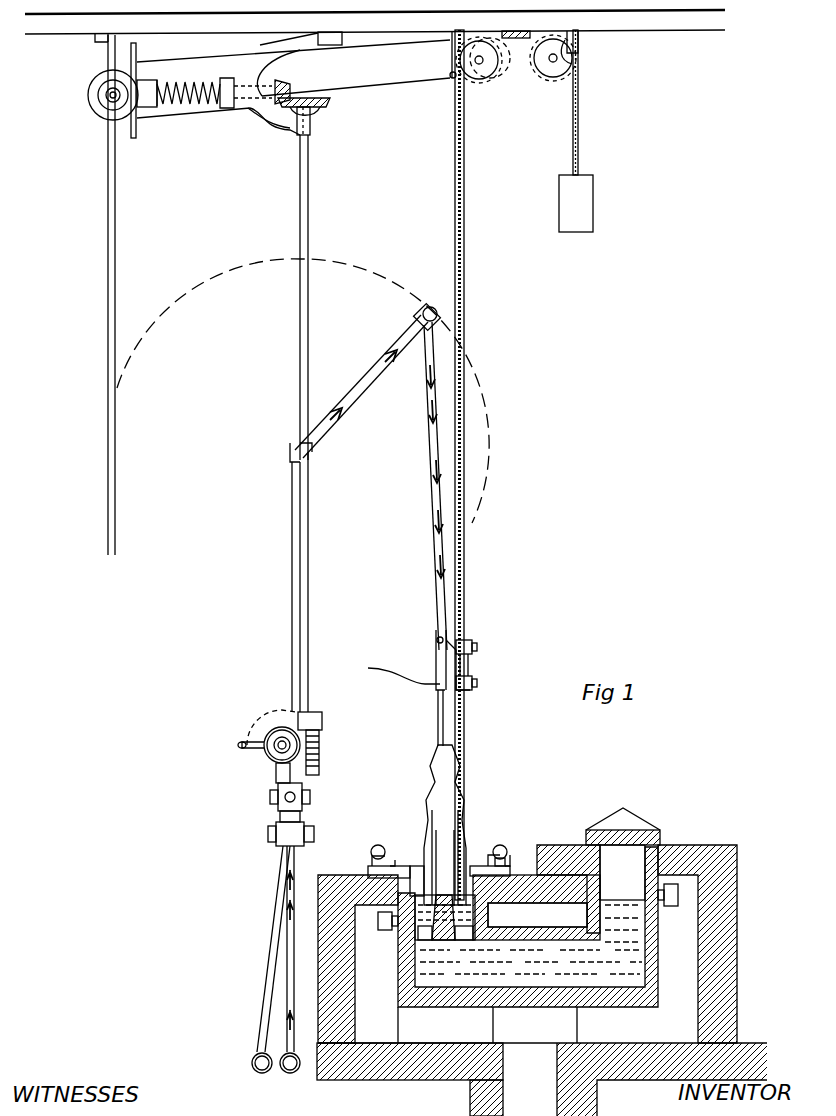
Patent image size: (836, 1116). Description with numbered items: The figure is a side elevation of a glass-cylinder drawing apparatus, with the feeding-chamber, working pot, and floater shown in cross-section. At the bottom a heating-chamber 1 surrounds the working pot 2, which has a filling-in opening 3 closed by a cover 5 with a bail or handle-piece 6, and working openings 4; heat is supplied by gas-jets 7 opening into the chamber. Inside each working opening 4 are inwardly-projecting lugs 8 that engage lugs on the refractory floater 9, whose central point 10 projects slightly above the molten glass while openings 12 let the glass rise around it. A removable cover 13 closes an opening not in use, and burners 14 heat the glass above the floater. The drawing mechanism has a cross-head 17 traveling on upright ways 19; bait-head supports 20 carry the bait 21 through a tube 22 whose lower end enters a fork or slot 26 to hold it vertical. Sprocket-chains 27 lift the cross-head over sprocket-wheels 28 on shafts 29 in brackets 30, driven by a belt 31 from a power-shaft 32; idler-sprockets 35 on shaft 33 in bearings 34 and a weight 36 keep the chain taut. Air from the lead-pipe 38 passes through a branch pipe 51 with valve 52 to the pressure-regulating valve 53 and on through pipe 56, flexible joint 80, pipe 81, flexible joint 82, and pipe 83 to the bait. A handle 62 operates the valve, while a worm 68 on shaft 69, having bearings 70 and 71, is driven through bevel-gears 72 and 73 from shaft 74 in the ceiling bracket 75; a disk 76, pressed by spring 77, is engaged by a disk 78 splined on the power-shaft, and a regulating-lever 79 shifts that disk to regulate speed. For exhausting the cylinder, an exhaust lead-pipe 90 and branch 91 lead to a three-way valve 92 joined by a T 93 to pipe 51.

The heating-chamber 1 is at (542, 944).
The working pot 2 is at (531, 944).
The filling-in opening 3 is at (622, 872).
The working opening 4 is at (415, 878).
The cover 5 is at (640, 835).
The bail or handle-piece 6 is at (640, 830).
The gas-jets 7 is at (378, 922).
The lugs 8 is at (472, 942).
The floater 9 is at (440, 942).
The central portion or point 10 is at (470, 904).
The openings 12 is at (398, 975).
The cover 13 is at (480, 862).
The burners 14 is at (382, 862).
The cross-head 17 is at (473, 680).
The upright ways or supports 19 is at (465, 245).
The bait-head support 20 is at (445, 650).
The bait 21 is at (440, 752).
The pipe or tube 22 is at (436, 704).
The fork or slot 26 is at (388, 667).
The sprocket-chains 27 is at (579, 135).
The sprocket-wheels 28 is at (492, 74).
The shafts 29 is at (481, 64).
The brackets or bearings 30 is at (451, 78).
The belt 31 is at (384, 92).
The power-shaft 32 is at (108, 96).
The shaft 33 is at (558, 59).
The bearings 34 is at (572, 62).
The idler-sprockets 35 is at (549, 74).
The weight 36 is at (576, 203).
The lead-pipe 38 is at (290, 1070).
The branch pipe 51 is at (303, 949).
The valve 52 is at (306, 836).
The pressure-regulating valve 53 is at (272, 737).
The pipe 56 is at (300, 634).
The handle 62 is at (248, 749).
The worm 68 is at (320, 748).
The shaft 69 is at (309, 335).
The bearing 70 is at (320, 718).
The bearing 71 is at (312, 126).
The bevel-gear 72 is at (308, 98).
The bevel-gear 73 is at (288, 86).
The shaft 74 is at (212, 98).
The bracket 75 is at (242, 110).
The disk 76 is at (136, 126).
The spring 77 is at (175, 84).
The disk 78 is at (97, 108).
The regulating-lever 79 is at (110, 160).
The flexible joint 80 is at (292, 452).
The pipe 81 is at (352, 392).
The flexible joint 82 is at (425, 308).
The pipe 83 is at (433, 440).
The lead-pipe 90 is at (260, 1068).
The branch 91 is at (272, 962).
The valve 92 is at (278, 796).
The T 93 is at (286, 800).